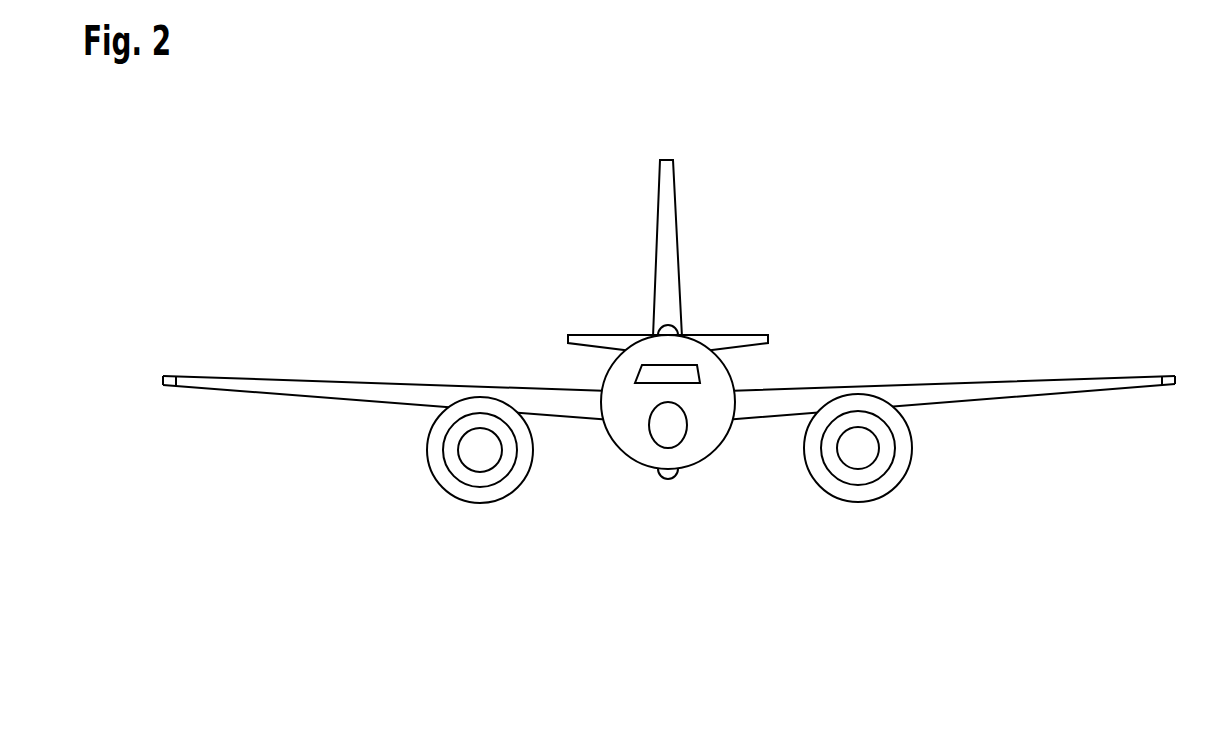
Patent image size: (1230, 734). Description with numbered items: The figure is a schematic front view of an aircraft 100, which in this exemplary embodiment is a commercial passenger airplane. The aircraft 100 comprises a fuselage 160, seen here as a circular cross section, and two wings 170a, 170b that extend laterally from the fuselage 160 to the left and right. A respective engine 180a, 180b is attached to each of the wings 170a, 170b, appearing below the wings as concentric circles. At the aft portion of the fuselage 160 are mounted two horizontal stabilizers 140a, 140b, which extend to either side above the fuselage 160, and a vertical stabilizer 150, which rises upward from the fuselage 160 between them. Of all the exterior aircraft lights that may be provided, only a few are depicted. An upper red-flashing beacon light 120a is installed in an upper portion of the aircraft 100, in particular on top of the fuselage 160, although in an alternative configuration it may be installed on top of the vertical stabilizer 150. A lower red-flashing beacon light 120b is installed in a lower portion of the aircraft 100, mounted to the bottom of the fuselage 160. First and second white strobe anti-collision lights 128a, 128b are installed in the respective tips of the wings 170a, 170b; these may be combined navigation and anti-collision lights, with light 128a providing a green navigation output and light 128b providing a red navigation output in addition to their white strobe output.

The aircraft 100 is at (953, 183).
The vertical stabilizer 150 is at (667, 193).
The horizontal stabilizer 140a is at (566, 333).
The horizontal stabilizer 140b is at (770, 333).
The wing 170a is at (277, 367).
The wing 170b is at (1058, 365).
The white strobe anti-collision light 128a is at (170, 388).
The white strobe anti-collision light 128b is at (1170, 385).
The engine 180a is at (423, 462).
The engine 180b is at (915, 465).
The fuselage 160 is at (617, 462).
The upper red-flashing beacon light 120a is at (664, 322).
The lower red-flashing beacon light 120b is at (670, 483).